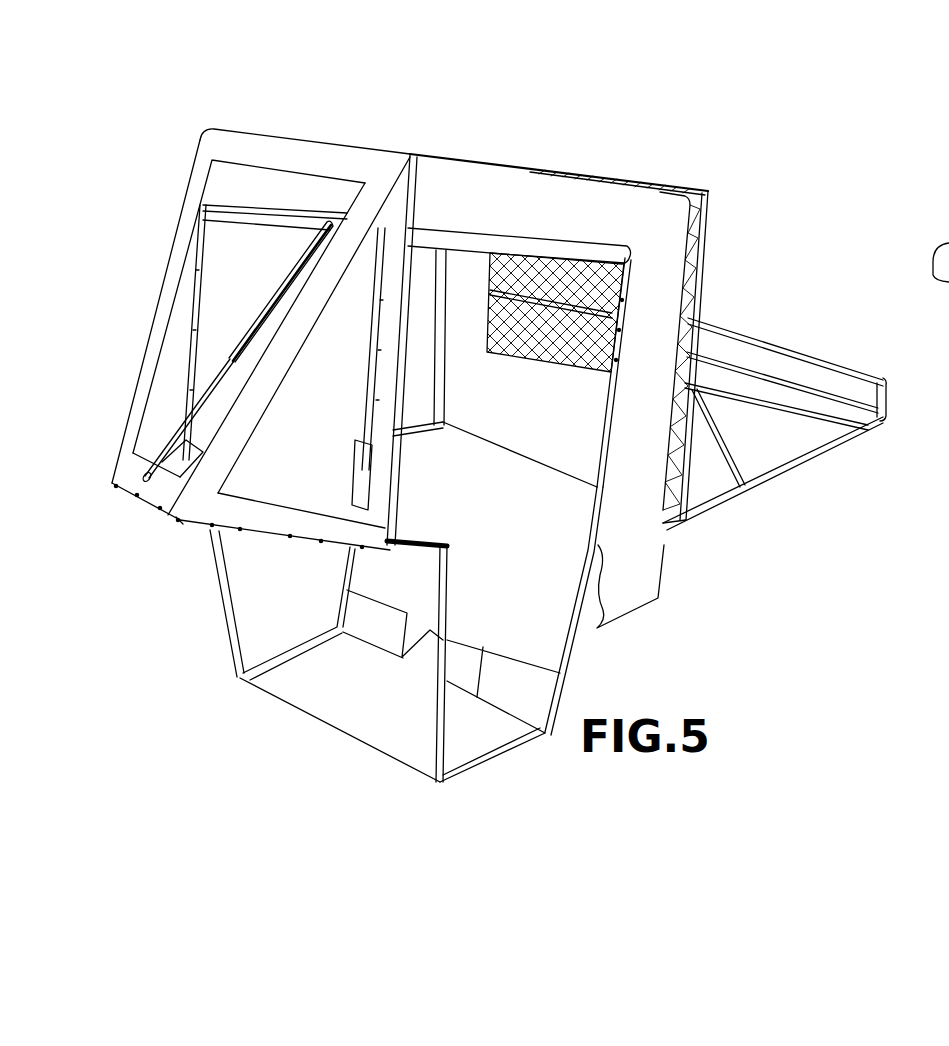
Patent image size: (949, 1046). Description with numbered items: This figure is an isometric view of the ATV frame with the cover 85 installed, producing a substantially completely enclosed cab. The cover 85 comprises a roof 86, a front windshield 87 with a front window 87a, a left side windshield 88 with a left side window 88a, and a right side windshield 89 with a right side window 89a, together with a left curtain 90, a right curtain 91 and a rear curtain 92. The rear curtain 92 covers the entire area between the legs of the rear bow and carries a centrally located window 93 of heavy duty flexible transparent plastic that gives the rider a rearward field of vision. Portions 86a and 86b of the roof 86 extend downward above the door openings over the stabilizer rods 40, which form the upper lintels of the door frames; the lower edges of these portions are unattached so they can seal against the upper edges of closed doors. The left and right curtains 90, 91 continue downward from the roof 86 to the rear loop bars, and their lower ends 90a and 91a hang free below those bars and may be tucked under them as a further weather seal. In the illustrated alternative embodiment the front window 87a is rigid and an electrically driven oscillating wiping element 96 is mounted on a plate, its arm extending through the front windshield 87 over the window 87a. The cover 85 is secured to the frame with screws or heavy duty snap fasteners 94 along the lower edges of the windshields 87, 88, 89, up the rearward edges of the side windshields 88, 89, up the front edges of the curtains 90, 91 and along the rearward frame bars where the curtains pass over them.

The cover 85 is at (432, 117).
The stabilizer rods 40 is at (235, 207).
The roof 86 is at (450, 160).
The roof portion 86a is at (570, 205).
The roof portion 86b is at (290, 185).
The front windshield 87 is at (137, 489).
The front window 87a is at (175, 535).
The left side windshield 88 is at (214, 532).
The left side window 88a is at (293, 487).
The right side windshield 89 is at (150, 447).
The right side window 89a is at (157, 404).
The left curtain 90 is at (693, 509).
The lower end of left curtain 90a is at (640, 588).
The right curtain 91 is at (417, 395).
The lower end of right curtain 91a is at (432, 432).
The rear curtain 92 is at (538, 452).
The window 93 is at (572, 352).
The snap fasteners 94 is at (192, 395).
The wiping element 96 is at (290, 275).